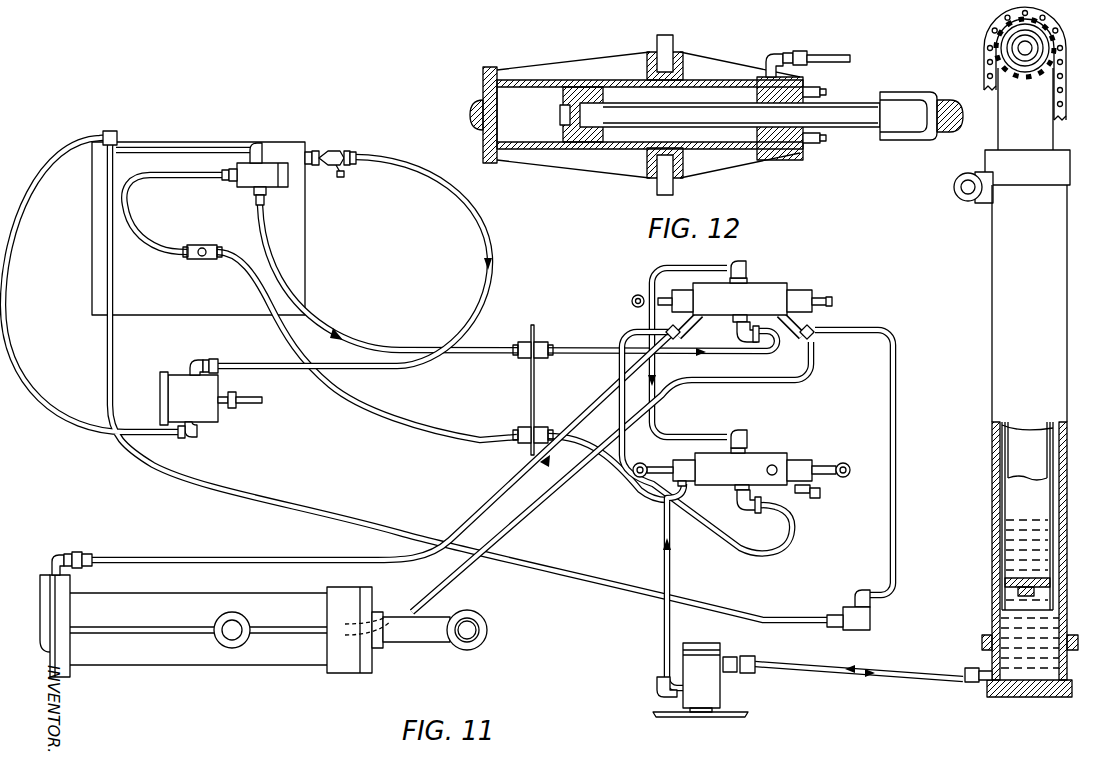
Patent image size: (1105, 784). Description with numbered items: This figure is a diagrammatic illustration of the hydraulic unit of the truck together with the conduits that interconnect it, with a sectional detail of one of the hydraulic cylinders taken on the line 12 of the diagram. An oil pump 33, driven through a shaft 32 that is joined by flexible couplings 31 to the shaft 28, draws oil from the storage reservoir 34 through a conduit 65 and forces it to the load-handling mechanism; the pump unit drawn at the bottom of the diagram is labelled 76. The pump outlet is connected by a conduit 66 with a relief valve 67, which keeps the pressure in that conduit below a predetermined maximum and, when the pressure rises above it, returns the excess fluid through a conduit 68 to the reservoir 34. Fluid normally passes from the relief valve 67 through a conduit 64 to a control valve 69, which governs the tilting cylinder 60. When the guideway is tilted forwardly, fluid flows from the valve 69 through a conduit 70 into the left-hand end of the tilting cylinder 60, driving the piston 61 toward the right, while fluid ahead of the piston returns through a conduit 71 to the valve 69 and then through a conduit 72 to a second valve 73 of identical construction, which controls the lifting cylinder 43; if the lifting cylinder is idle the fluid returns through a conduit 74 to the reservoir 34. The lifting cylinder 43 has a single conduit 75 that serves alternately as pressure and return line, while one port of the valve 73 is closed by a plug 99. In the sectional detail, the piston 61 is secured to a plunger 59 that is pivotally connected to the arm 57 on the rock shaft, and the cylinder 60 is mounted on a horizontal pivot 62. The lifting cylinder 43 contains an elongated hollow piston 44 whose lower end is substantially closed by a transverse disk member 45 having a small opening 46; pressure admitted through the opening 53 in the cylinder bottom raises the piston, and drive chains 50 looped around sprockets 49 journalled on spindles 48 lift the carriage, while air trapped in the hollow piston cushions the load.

In FIG. 11, the section line 12— 12 is at (35, 630).
In FIG. 11, the shaft 28 is at (247, 397).
In FIG. 11, the flexible couplings 31 is at (237, 410).
In FIG. 11, the shaft 32 is at (207, 434).
In FIG. 11, the oil pump 33 is at (189, 392).
In FIG. 11, the storage reservoir 34 is at (198, 228).
In FIG. 11, the cylinder 43 is at (995, 492).
In FIG. 11, the elongated hollow piston 44 is at (1020, 458).
In FIG. 11, the transverse disk member 45 is at (1010, 582).
In FIG. 11, the opening 46 is at (1015, 592).
In FIG. 11, the spindles 48 is at (1022, 47).
In FIG. 11, the sprockets 49 is at (1000, 70).
In FIG. 11, the drive chains 50 is at (1064, 88).
In FIG. 11, the opening 53 is at (1005, 680).
In FIG. 12, the arm 57 is at (942, 140).
In FIG. 12, the plunger 59 is at (740, 130).
In FIG. 11, the cylinder 60 is at (177, 657).
In FIG. 12, the cylinder 60 is at (528, 160).
In FIG. 12, the piston 61 is at (574, 150).
In FIG. 11, the horizontal pivot 62 is at (233, 622).
In FIG. 12, the horizontal pivot 62 is at (672, 50).
In FIG. 11, the conduit 64 is at (350, 347).
In FIG. 11, the conduit 65 is at (486, 230).
In FIG. 11, the conduit 66 is at (6, 325).
In FIG. 11, the relief valve 67 is at (255, 174).
In FIG. 11, the conduit 68 is at (141, 226).
In FIG. 11, the control valve 69 is at (765, 285).
In FIG. 11, the conduit 70 is at (605, 410).
In FIG. 11, the conduit 71 is at (556, 486).
In FIG. 12, the conduit 71 is at (838, 58).
In FIG. 11, the conduit 72 is at (697, 272).
In FIG. 11, the valve 73 is at (755, 452).
In FIG. 11, the conduit 74 is at (742, 548).
In FIG. 11, the conduit 75 is at (670, 572).
In FIG. 11, the pump 76 is at (700, 680).
In FIG. 11, the plug 99 is at (778, 466).